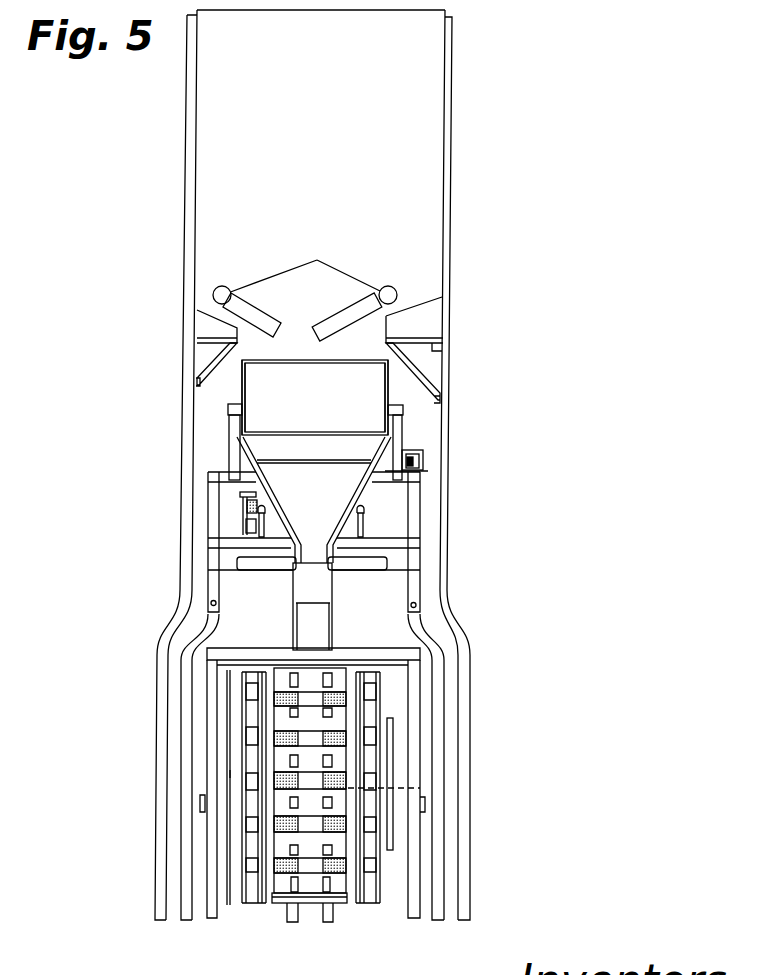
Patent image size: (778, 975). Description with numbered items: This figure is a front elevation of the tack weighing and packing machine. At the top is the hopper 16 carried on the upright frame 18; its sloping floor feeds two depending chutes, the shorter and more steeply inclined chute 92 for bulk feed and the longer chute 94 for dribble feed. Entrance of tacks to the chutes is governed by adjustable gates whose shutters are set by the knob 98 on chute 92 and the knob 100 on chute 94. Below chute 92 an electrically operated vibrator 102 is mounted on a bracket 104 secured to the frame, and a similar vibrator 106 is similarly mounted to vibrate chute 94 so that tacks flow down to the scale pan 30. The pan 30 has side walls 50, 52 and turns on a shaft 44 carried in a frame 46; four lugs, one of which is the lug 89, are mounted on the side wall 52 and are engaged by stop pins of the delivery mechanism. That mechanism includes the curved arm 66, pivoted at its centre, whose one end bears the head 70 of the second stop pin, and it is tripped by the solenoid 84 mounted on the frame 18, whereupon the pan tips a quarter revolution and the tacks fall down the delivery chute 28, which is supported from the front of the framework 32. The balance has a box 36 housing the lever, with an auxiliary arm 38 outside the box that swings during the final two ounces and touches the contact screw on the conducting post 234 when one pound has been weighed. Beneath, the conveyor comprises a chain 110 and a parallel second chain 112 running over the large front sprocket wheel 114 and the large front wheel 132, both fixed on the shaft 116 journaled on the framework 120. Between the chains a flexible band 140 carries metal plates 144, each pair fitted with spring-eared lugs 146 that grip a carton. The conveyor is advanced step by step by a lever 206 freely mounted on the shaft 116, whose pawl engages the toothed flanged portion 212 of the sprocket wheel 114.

The hopper 16 is at (433, 71).
The upright frame 18 is at (185, 428).
The delivery chute 28 is at (363, 492).
The scale pan 30 is at (320, 409).
The framework 32 is at (185, 655).
The box 36 is at (278, 532).
The auxiliary arm 38 is at (245, 521).
The shaft 44 is at (228, 410).
The frame 46 is at (402, 417).
The side wall 50 is at (242, 380).
The side wall 52 is at (385, 387).
The curved arm 66 is at (425, 461).
The head 70 is at (410, 455).
The solenoid 84 is at (428, 468).
The lug 89 is at (413, 373).
The chute 92 is at (268, 318).
The chute 94 is at (344, 322).
The knob 98 is at (222, 286).
The knob 100 is at (389, 286).
The vibrator 102 is at (207, 323).
The bracket 104 is at (197, 344).
The vibrator 106 is at (383, 327).
The chain 110 is at (347, 893).
The second chain 112 is at (245, 896).
The large front sprocket wheel 114 is at (377, 694).
The shaft 116 is at (230, 770).
The framework 120 is at (207, 842).
The large front wheel 132 is at (250, 719).
The band 140 is at (337, 722).
The metal plates 144 is at (337, 812).
The lugs 146 is at (335, 913).
The lever 206 is at (400, 770).
The flanged portion 212 is at (393, 753).
The conducting post 234 is at (245, 503).